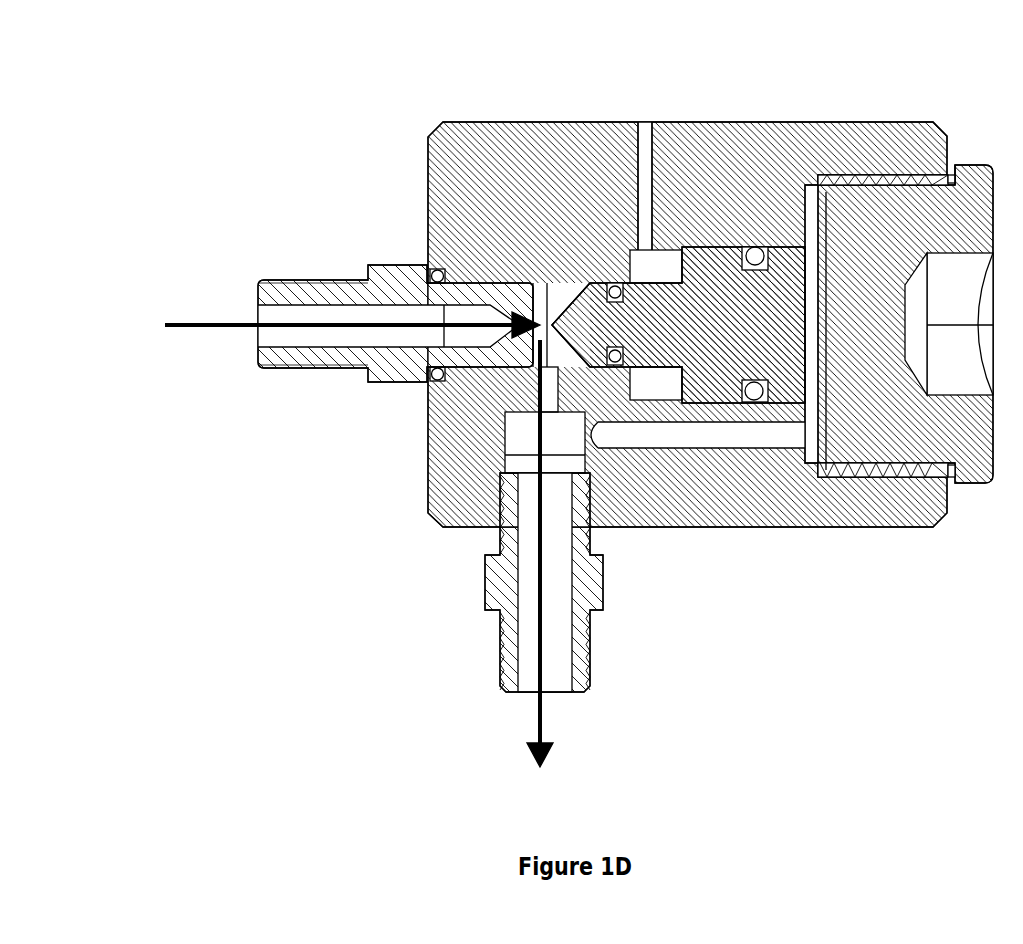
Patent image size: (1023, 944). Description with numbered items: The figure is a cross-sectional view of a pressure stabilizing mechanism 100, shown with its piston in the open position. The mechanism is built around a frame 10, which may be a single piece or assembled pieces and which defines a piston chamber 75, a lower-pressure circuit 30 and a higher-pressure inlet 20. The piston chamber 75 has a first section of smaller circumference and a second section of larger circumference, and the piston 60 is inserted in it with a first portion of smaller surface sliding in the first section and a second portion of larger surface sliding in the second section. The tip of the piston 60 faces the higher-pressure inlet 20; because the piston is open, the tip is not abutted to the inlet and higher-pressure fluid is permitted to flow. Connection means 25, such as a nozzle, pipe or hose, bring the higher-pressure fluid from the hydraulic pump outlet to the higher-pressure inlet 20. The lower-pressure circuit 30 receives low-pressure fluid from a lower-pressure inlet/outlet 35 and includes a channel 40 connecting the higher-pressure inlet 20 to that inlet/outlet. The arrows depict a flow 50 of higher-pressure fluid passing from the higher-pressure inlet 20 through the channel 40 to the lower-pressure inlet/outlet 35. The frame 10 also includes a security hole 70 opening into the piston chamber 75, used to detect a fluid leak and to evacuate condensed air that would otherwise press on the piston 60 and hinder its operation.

The pressure stabilizing mechanism 100 is at (151, 104).
The frame 10 is at (545, 122).
The higher-pressure inlet 20 is at (538, 290).
The connection means 25 is at (300, 278).
The lower-pressure circuit 30 is at (516, 436).
The lower-pressure inlet/outlet 35 is at (486, 583).
The channel 40 is at (534, 388).
The flow 50 is at (178, 318).
The piston 60 is at (717, 251).
The security hole 70 is at (644, 130).
The piston chamber 75 is at (658, 262).